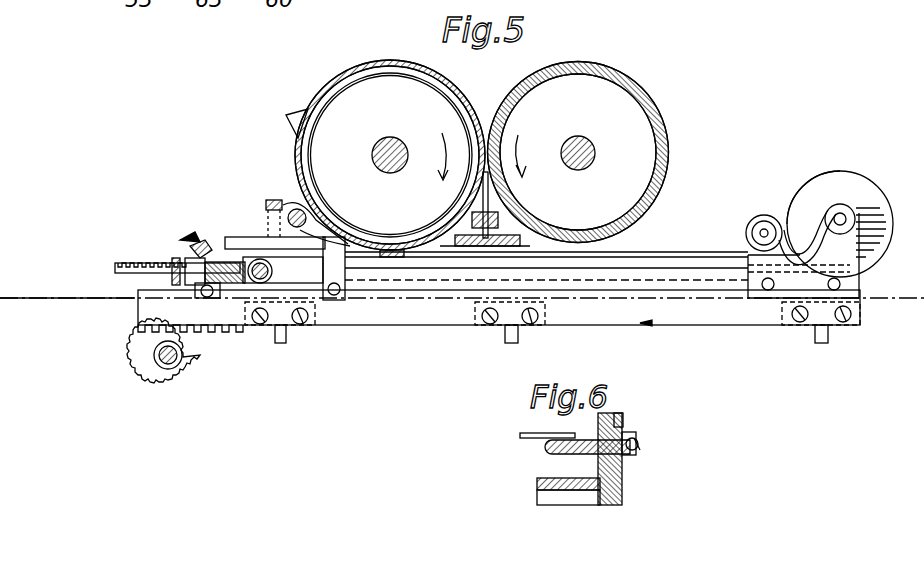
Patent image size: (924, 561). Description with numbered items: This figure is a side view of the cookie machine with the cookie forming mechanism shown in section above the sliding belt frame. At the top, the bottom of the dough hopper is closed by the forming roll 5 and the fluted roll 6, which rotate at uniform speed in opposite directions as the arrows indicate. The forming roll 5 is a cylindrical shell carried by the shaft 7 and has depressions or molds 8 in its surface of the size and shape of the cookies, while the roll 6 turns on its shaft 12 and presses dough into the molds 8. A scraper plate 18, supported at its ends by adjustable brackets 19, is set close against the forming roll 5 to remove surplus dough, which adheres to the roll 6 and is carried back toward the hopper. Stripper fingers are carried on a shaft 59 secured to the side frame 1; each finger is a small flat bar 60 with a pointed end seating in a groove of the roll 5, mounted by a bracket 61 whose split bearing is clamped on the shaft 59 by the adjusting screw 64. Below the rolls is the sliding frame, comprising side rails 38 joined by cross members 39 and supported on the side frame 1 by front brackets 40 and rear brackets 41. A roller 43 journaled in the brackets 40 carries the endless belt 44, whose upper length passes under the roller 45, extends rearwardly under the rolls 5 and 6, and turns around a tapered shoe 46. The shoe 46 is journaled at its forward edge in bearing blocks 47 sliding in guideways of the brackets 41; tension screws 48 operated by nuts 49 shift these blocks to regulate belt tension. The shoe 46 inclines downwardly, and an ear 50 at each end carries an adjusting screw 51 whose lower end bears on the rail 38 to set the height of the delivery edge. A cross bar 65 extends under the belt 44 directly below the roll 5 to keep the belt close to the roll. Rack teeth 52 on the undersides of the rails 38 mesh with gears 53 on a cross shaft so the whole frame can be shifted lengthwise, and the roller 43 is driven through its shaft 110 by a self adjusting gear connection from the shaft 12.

In FIG. 5, the side frame 1 is at (12, 297).
In FIG. 5, the forming roll 5 is at (390, 155).
In FIG. 5, the roll 6 is at (668, 136).
In FIG. 5, the shaft 7 is at (376, 148).
In FIG. 5, the depressions or molds 8 is at (286, 118).
In FIG. 5, the shaft 12 is at (579, 170).
In FIG. 5, the scraper plate 18 is at (467, 198).
In FIG. 5, the brackets 19 is at (512, 232).
In FIG. 5, the side rails 38 is at (616, 320).
In FIG. 6, the side rails 38 is at (620, 490).
In FIG. 5, the cross members 39 is at (518, 338).
In FIG. 6, the cross members 39 is at (557, 505).
In FIG. 5, the brackets 40 is at (852, 279).
In FIG. 5, the brackets 41 is at (344, 285).
In FIG. 5, the roller 43 is at (875, 212).
In FIG. 5, the endless belt or apron 44 is at (689, 252).
In FIG. 6, the endless belt or apron 44 is at (525, 433).
In FIG. 5, the roller 45 is at (763, 214).
In FIG. 5, the tapered shoe 46 is at (238, 290).
In FIG. 6, the tapered shoe 46 is at (548, 452).
In FIG. 5, the bearing blocks 47 is at (283, 271).
In FIG. 6, the bearing blocks 47 is at (632, 456).
In FIG. 5, the tension screws 48 is at (177, 260).
In FIG. 5, the nuts 49 is at (185, 262).
In FIG. 5, the ear 50 is at (222, 266).
In FIG. 5, the adjusting screw 51 is at (202, 246).
In FIG. 5, the rack teeth 52 is at (207, 326).
In FIG. 5, the gears 53 is at (169, 371).
In FIG. 5, the shaft 59 is at (305, 215).
In FIG. 5, the flat bar 60 is at (352, 243).
In FIG. 5, the bracket 61 is at (308, 227).
In FIG. 5, the adjusting screw 64 is at (277, 208).
In FIG. 5, the cross bar 65 is at (406, 261).
In FIG. 5, the shaft 110 is at (838, 213).